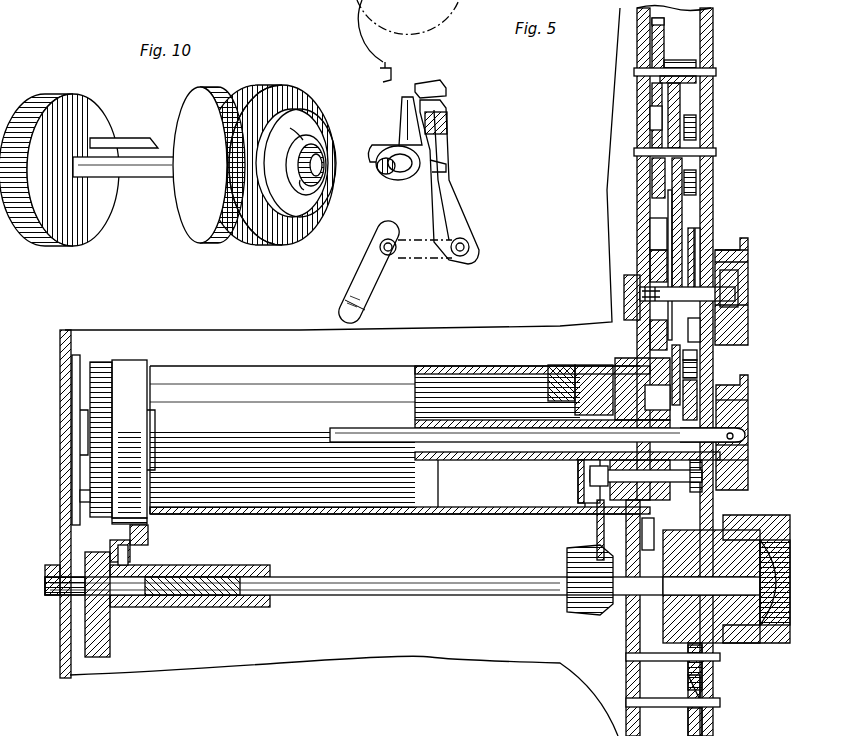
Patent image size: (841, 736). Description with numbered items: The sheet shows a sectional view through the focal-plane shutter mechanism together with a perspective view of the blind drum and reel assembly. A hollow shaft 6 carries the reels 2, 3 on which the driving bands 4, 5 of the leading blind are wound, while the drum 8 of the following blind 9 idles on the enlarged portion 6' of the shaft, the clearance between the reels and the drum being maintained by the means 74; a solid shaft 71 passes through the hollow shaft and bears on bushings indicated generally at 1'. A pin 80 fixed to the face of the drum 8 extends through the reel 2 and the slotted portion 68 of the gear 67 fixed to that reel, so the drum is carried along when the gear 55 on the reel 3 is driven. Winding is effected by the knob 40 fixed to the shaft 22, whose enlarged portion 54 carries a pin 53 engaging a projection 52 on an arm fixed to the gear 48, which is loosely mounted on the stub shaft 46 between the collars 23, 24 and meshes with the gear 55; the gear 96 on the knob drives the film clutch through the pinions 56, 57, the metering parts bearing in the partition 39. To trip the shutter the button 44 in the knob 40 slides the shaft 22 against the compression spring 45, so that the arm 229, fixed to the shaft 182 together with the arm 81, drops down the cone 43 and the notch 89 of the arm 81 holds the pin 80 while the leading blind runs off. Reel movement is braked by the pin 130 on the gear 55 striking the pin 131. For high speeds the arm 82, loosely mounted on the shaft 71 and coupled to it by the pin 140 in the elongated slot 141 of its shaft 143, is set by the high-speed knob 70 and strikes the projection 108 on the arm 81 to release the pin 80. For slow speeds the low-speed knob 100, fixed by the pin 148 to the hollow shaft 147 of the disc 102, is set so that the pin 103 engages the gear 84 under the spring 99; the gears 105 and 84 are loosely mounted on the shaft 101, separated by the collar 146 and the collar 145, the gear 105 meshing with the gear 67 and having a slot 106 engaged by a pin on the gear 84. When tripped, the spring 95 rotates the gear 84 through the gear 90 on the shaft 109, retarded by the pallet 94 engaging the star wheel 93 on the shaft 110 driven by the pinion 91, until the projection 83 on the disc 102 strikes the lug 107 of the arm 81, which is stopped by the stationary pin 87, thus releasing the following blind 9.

In FIG. 5, the bushings in recessed portion of shaft 1' is at (537, 435).
In FIG. 10, the reel 2 is at (228, 92).
In FIG. 5, the reel 2 is at (618, 358).
In FIG. 5, the reel 3 is at (128, 372).
In FIG. 5, the driving band 4 is at (648, 520).
In FIG. 5, the driving band 5 is at (148, 522).
In FIG. 5, the hollow shaft 6 is at (400, 440).
In FIG. 5, the enlarged portion of shaft 6' is at (557, 365).
In FIG. 10, the drum 8 is at (52, 100).
In FIG. 5, the drum 8 is at (462, 500).
In FIG. 5, the following blind 9 is at (365, 512).
In FIG. 5, the shaft 22 is at (405, 570).
In FIG. 5, the collar 23 is at (110, 606).
In FIG. 5, the collar 24 is at (60, 562).
In FIG. 5, the partition 39 is at (628, 634).
In FIG. 5, the winding knob 40 is at (780, 628).
In FIG. 5, the cone 43 is at (567, 556).
In FIG. 5, the button 44 is at (768, 520).
In FIG. 5, the compression spring 45 is at (222, 598).
In FIG. 5, the stub shaft 46 is at (46, 584).
In FIG. 5, the gear 48 is at (110, 648).
In FIG. 5, the projection 52 is at (148, 538).
In FIG. 5, the pin 53 is at (110, 548).
In FIG. 5, the enlarged portion of shaft 54 is at (130, 563).
In FIG. 5, the gear 55 is at (92, 390).
In FIG. 5, the pinion 56 is at (702, 734).
In FIG. 5, the pinion 57 is at (700, 680).
In FIG. 10, the gear 67 is at (310, 206).
In FIG. 5, the gear 67 is at (705, 505).
In FIG. 10, the slot 68 is at (300, 150).
In FIG. 5, the slot 68 is at (578, 470).
In FIG. 5, the high speed knob 70 is at (748, 462).
In FIG. 5, the shaft 71 is at (520, 432).
In FIG. 5, the clearance means 74 is at (596, 365).
In FIG. 10, the pin 80 is at (130, 138).
In FIG. 5, the pin 80 is at (702, 476).
In FIG. 10, the arm 81 is at (458, 180).
In FIG. 5, the arm 81 is at (680, 395).
In FIG. 10, the releasing arm 82 is at (400, 124).
In FIG. 5, the releasing arm 82 is at (712, 408).
In FIG. 10, the projection 83 is at (380, 75).
In FIG. 5, the gear 84 is at (686, 210).
In FIG. 5, the stationary pin 87 is at (697, 372).
In FIG. 10, the notch 89 is at (446, 168).
In FIG. 5, the gear 90 is at (690, 200).
In FIG. 5, the pinion 91 is at (690, 62).
In FIG. 5, the star wheel 93 is at (666, 34).
In FIG. 5, the pallet 94 is at (660, 172).
In FIG. 5, the spring 95 is at (692, 116).
In FIG. 5, the gear 96 is at (700, 660).
In FIG. 5, the spring 99 is at (696, 235).
In FIG. 5, the low speed knob 100 is at (750, 278).
In FIG. 5, the shaft 101 is at (640, 294).
In FIG. 10, the disc 102 is at (358, 36).
In FIG. 5, the disc 102 is at (700, 226).
In FIG. 5, the pin 103 is at (700, 328).
In FIG. 5, the gear 105 is at (650, 228).
In FIG. 5, the slot 106 is at (658, 243).
In FIG. 10, the projection 107 is at (446, 86).
In FIG. 5, the projection 107 is at (697, 355).
In FIG. 10, the projection 108 is at (432, 132).
In FIG. 5, the shaft 109 is at (714, 152).
In FIG. 5, the shaft 110 is at (714, 72).
In FIG. 5, the pin 130 is at (88, 494).
In FIG. 5, the pin 131 is at (90, 500).
In FIG. 5, the pin 140 is at (748, 405).
In FIG. 5, the elongated slot 141 is at (748, 420).
In FIG. 5, the shaft 143 is at (748, 440).
In FIG. 5, the collar 145 is at (748, 262).
In FIG. 5, the collar 146 is at (748, 244).
In FIG. 5, the hollow shaft 147 is at (748, 308).
In FIG. 5, the pin 148 is at (740, 290).
In FIG. 10, the shaft 182 is at (418, 262).
In FIG. 10, the arm 229 is at (372, 300).
In FIG. 5, the arm 229 is at (597, 525).